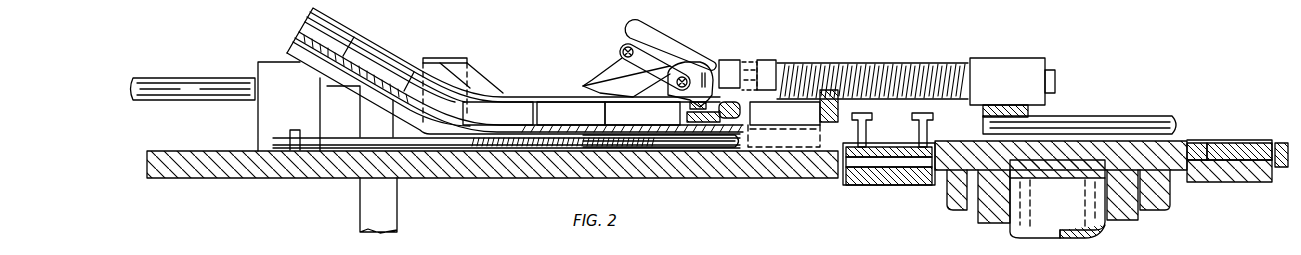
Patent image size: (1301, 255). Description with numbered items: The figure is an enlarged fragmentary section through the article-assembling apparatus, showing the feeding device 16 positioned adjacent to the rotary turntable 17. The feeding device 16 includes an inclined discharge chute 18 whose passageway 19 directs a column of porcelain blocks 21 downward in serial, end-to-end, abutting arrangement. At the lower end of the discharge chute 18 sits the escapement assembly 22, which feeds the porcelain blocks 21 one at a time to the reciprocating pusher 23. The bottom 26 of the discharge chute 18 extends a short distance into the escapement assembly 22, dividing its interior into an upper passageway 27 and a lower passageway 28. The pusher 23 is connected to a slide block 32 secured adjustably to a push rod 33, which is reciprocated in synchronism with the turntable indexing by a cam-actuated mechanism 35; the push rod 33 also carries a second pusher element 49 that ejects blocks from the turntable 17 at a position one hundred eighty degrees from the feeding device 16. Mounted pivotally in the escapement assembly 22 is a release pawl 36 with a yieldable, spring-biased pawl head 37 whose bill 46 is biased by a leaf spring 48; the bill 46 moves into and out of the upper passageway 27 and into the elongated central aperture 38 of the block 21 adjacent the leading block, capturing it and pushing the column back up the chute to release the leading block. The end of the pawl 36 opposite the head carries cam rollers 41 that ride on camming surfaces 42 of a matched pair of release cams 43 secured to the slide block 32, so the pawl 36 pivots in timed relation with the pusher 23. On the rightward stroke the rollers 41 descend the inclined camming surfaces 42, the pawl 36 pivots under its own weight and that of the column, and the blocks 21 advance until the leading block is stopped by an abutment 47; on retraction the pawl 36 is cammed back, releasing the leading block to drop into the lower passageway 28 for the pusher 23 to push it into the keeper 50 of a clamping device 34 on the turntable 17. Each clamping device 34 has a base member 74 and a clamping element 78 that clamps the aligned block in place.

The feeding device 16 is at (843, 50).
The rotary turntable 17 is at (953, 221).
The discharge chute 18 is at (338, 21).
The passageway 19 is at (383, 62).
The porcelain block 21 is at (415, 82).
The escapement assembly 22 is at (674, 64).
The reciprocating pusher 23 is at (1018, 54).
The bottom of the discharge chute 26 is at (728, 130).
The upper passageway 27 is at (712, 147).
The lower passageway 28 is at (678, 146).
The slide block 32 is at (468, 58).
The push rod 33 is at (208, 80).
The clamping device 34 is at (893, 168).
The cam-actuated mechanism 35 is at (405, 205).
The release pawl 36 is at (689, 46).
The pawl head 37 is at (725, 70).
The elongated central aperture 38 is at (745, 116).
The cam roller 41 is at (622, 47).
The camming surface 42 is at (588, 88).
The release cam 43 is at (604, 63).
The bill 46 is at (710, 112).
The abutment 47 is at (822, 122).
The leaf spring 48 is at (658, 33).
The second pusher element 49 is at (1130, 115).
The keeper 50 is at (876, 145).
The base member 74 is at (852, 157).
The clamping element 78 is at (913, 115).